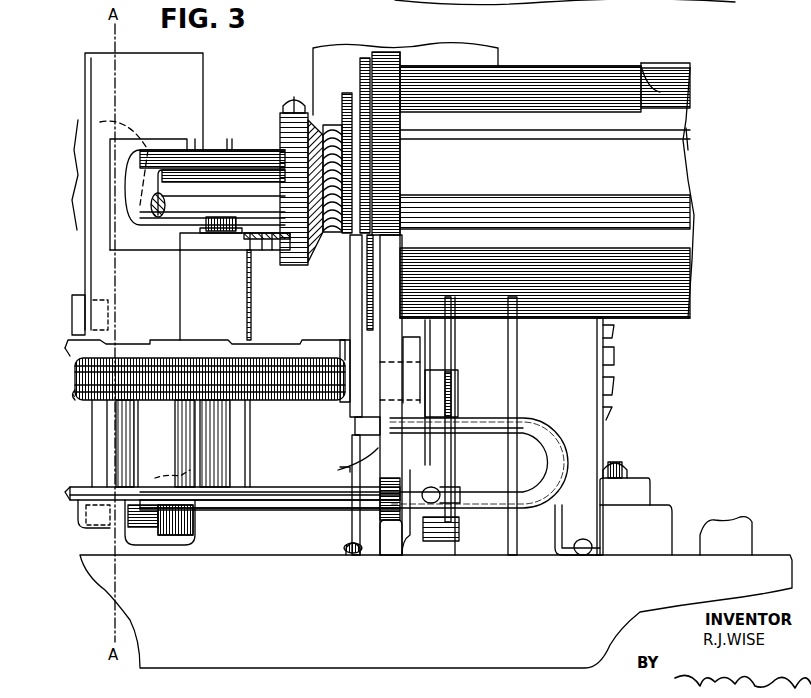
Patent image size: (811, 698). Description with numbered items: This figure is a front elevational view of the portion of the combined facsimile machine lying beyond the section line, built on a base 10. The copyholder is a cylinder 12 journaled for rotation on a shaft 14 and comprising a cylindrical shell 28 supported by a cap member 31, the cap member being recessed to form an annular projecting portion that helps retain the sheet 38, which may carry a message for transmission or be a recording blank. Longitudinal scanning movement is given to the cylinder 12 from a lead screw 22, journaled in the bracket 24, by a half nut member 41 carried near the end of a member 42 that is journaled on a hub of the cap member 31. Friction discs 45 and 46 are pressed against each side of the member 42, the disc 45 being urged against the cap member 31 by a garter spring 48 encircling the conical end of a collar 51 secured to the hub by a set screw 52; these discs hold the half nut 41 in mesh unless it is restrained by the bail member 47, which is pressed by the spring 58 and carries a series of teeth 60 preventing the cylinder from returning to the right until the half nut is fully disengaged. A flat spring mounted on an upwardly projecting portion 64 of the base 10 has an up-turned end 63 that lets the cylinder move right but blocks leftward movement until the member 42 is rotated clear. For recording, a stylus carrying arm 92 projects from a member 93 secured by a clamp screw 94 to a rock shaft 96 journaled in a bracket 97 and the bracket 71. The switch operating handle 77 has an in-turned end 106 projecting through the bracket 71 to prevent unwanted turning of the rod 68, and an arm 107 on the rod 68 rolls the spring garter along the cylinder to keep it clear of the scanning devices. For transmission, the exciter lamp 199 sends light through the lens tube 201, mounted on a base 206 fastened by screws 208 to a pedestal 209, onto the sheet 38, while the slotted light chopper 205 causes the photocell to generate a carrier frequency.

The base 10 is at (276, 658).
The cylinder 12 is at (699, 142).
The shaft 14 is at (196, 175).
The lead screw 22 is at (306, 403).
The bracket 24 is at (415, 340).
The cylindrical shell 28 is at (655, 70).
The cap member 31 is at (386, 60).
The sheet 38 is at (580, 70).
The half nut member 41 is at (344, 348).
The member 42 is at (352, 301).
The friction disc 45 is at (367, 115).
The friction disc 46 is at (342, 110).
The bail member 47 is at (262, 348).
The garter spring 48 is at (332, 125).
The collar 51 is at (280, 133).
The set screw 52 is at (284, 108).
The spring 58 is at (226, 445).
The teeth 60 is at (148, 332).
The up-turned end 63 is at (338, 472).
The upwardly projecting portion 64 is at (128, 541).
The rod 68 is at (332, 510).
The bracket 71 is at (382, 533).
The switch operating handle 77 is at (562, 452).
The stylus carrying arm 92 is at (452, 341).
The member 93 is at (457, 465).
The clamp screw 94 is at (318, 266).
The rock shaft 96 is at (74, 490).
The bracket 97 is at (548, 2).
The in-turned end 106 is at (473, 426).
The arm 107 is at (450, 386).
The exciter lamp 199 is at (122, 128).
The lens tube 201 is at (246, 150).
The light chopper 205 is at (606, 354).
The base 206 is at (182, 243).
The screws 208 is at (222, 215).
The pedestal 209 is at (190, 288).